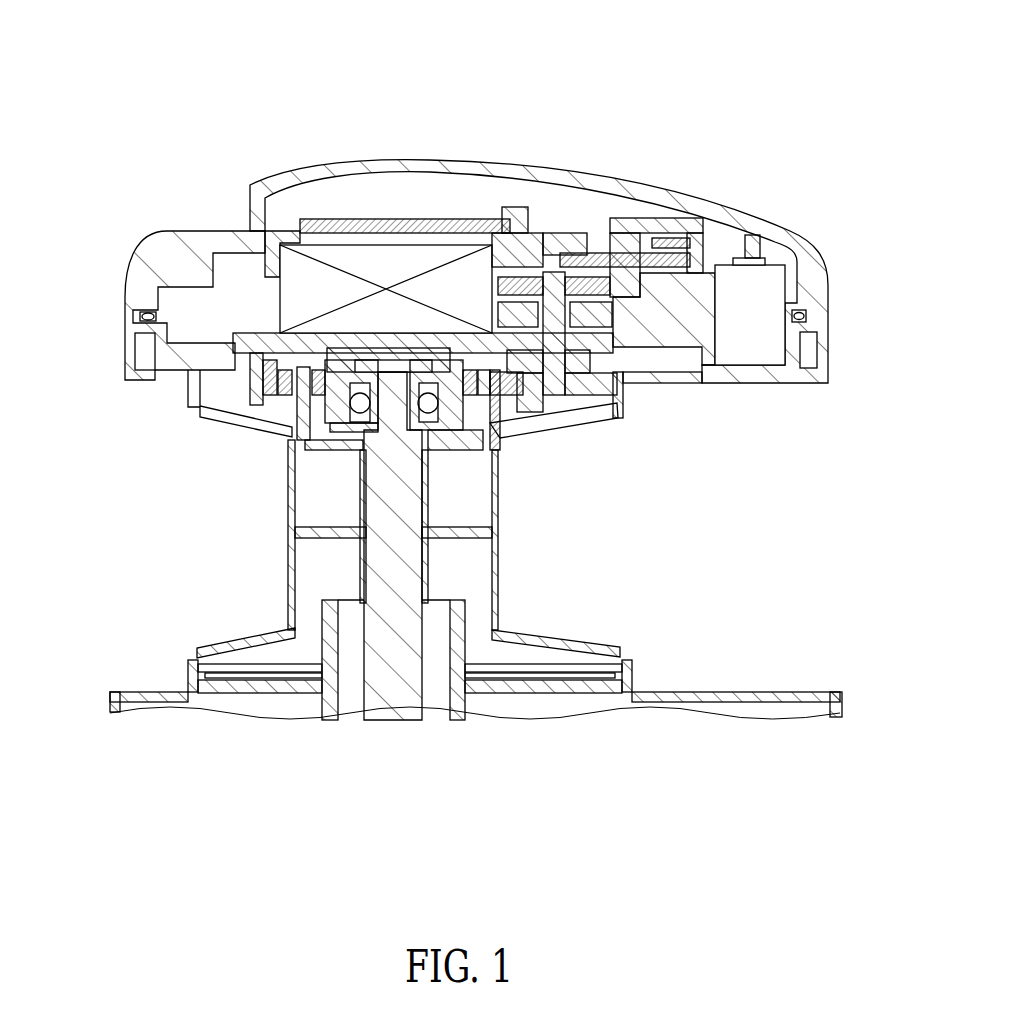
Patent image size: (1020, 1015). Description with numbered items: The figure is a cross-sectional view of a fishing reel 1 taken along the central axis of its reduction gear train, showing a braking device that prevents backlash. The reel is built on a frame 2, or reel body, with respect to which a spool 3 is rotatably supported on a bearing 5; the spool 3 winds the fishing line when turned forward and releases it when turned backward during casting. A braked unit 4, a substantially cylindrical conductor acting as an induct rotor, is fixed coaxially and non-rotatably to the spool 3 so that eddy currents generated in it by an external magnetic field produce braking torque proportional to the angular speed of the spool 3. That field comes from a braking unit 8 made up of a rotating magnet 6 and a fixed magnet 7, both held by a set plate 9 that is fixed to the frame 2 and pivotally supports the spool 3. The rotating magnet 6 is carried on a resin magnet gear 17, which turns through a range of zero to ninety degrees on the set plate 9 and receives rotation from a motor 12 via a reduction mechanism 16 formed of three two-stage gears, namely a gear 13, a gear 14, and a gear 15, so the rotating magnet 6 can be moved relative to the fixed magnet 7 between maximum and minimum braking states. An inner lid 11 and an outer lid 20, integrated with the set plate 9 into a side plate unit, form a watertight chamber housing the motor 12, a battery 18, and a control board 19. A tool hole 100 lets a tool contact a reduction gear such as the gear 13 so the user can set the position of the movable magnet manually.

The fishing reel 1 is at (494, 31).
The frame 2 is at (635, 388).
The spool 3 is at (510, 635).
The braked unit 4 is at (505, 418).
The bearing 5 is at (432, 432).
The rotating magnet 6 is at (285, 392).
The fixed magnet 7 is at (318, 398).
The braking unit 8 is at (117, 502).
The set plate 9 is at (197, 417).
The inner lid 11 is at (142, 313).
The motor 12 is at (756, 345).
The gear 13 is at (524, 282).
The gear 14 is at (583, 262).
The gear 15 is at (686, 252).
The reduction mechanism 16 is at (520, 107).
The magnet gear 17 is at (270, 385).
The battery 18 is at (342, 258).
The control board 19 is at (392, 228).
The outer lid 20 is at (145, 277).
The tool hole 100 is at (557, 418).